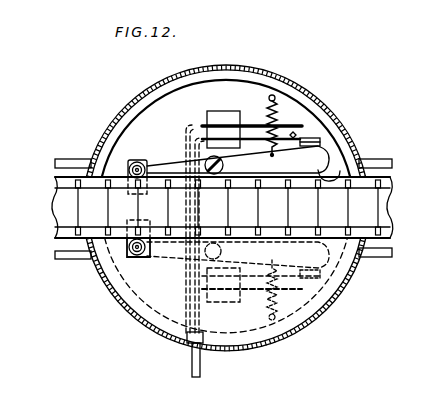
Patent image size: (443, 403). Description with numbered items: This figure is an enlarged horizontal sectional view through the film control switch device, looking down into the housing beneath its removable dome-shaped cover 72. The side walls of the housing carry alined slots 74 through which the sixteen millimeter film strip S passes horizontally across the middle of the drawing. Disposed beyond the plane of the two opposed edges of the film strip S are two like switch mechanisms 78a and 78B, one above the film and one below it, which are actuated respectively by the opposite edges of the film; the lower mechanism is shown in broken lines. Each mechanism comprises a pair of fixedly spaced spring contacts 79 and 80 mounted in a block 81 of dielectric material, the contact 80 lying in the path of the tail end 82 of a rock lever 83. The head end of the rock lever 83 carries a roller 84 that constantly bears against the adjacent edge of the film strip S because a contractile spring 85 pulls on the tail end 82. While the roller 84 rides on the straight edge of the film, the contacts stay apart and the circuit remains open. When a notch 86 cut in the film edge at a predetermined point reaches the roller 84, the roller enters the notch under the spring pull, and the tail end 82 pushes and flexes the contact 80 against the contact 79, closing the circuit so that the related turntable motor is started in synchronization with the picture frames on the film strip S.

The dome-shaped cover 72 is at (128, 320).
The alined slots 74 is at (70, 168).
The film strip S is at (396, 178).
The roller 84 is at (139, 162).
The tail end 82 is at (316, 155).
The rock lever 83 is at (243, 165).
The block of dielectric material 81 is at (221, 111).
The spring contact 79 is at (289, 126).
The spring contact 80 is at (320, 140).
The switch mechanism 78a is at (309, 129).
The switch mechanism 78B is at (308, 286).
The contractile spring 85 is at (270, 97).
The notch 86 is at (340, 172).